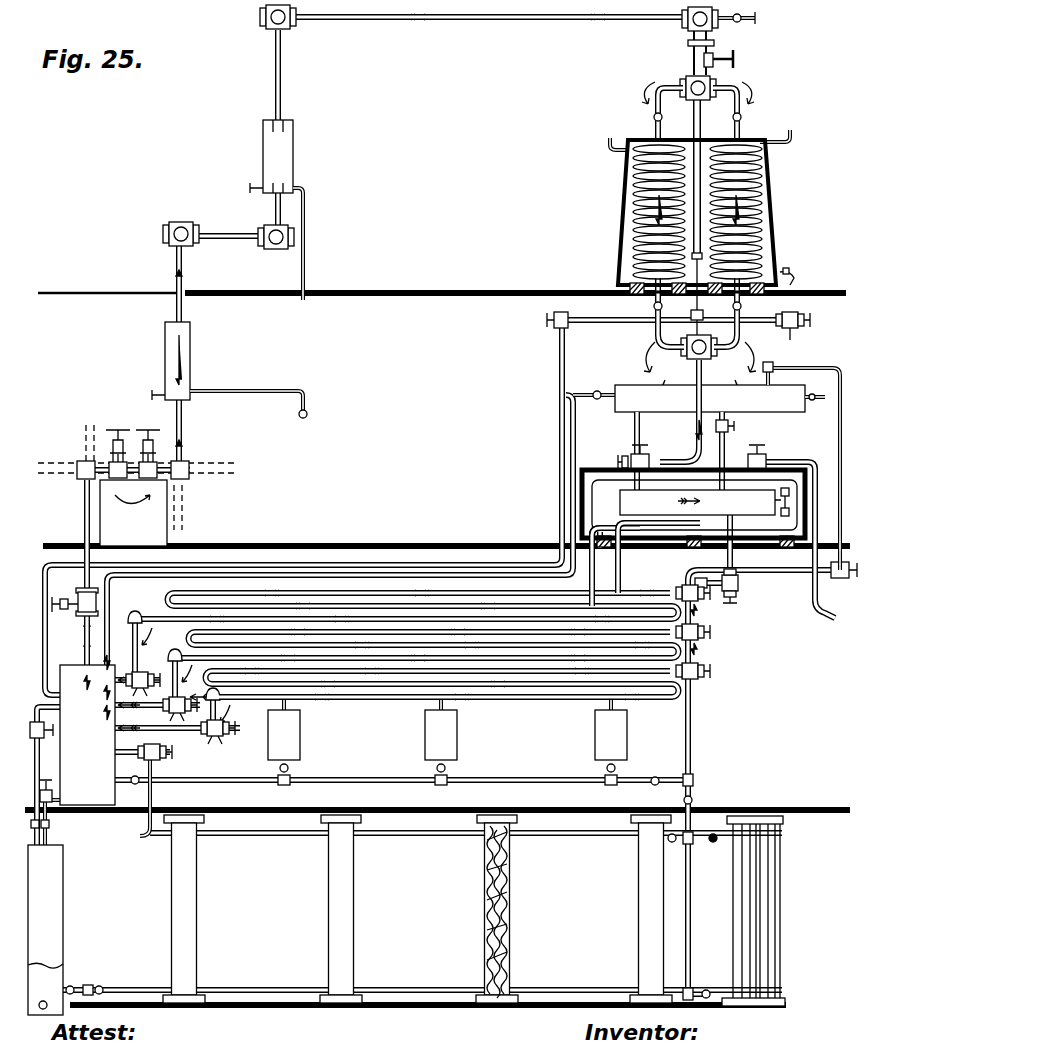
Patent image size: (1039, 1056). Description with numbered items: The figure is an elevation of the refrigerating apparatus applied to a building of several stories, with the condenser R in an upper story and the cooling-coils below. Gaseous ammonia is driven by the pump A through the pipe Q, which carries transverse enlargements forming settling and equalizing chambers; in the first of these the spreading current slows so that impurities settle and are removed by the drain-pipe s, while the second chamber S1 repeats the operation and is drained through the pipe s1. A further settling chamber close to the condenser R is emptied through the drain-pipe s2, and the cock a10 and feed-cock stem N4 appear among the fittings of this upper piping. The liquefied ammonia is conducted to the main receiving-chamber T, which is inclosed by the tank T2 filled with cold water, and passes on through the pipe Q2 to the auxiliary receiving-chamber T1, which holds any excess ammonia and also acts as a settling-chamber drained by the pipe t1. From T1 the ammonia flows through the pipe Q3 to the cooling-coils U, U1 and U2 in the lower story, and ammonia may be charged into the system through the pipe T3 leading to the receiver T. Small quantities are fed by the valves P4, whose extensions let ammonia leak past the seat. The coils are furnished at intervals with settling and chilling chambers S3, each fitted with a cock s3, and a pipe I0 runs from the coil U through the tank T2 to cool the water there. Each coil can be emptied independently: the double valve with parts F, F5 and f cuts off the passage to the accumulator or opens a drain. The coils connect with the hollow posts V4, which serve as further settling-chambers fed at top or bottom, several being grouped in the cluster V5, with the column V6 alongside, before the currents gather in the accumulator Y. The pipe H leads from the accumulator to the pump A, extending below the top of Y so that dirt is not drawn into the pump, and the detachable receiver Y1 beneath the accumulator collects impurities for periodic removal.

The pipe Q is at (372, 30).
The cock a10 is at (748, 28).
The stem N4 is at (725, 82).
The settling and equalizing chamber S1 is at (298, 152).
The pipe s1 is at (309, 244).
The drain-pipe s2 is at (684, 126).
The condenser R is at (622, 200).
The drain-pipe s is at (227, 370).
The pump A is at (133, 488).
The drain-pipe t1 is at (593, 383).
The auxiliary receiving-chamber T1 is at (720, 398).
The pipe Q2 is at (637, 428).
The pipe Q3 is at (838, 440).
The tank T2 is at (582, 484).
The pipe T3 is at (791, 530).
The main receiving-chamber T is at (693, 504).
The cooling-coil U is at (410, 635).
The cooling-coil U1 is at (188, 634).
The cooling-coil U2 is at (344, 700).
The pipe I0 is at (582, 572).
The valve P4 is at (710, 604).
The pipe H is at (85, 652).
The accumulator Y is at (87, 730).
The valve F is at (143, 688).
The valve F5 is at (199, 714).
The valve part f is at (232, 725).
The settling and chilling chamber S3 is at (447, 733).
The cock s3 is at (460, 773).
The receiver Y1 is at (46, 917).
The hollow post V4 is at (184, 910).
The cluster V5 is at (765, 911).
The filter column V6 is at (484, 862).